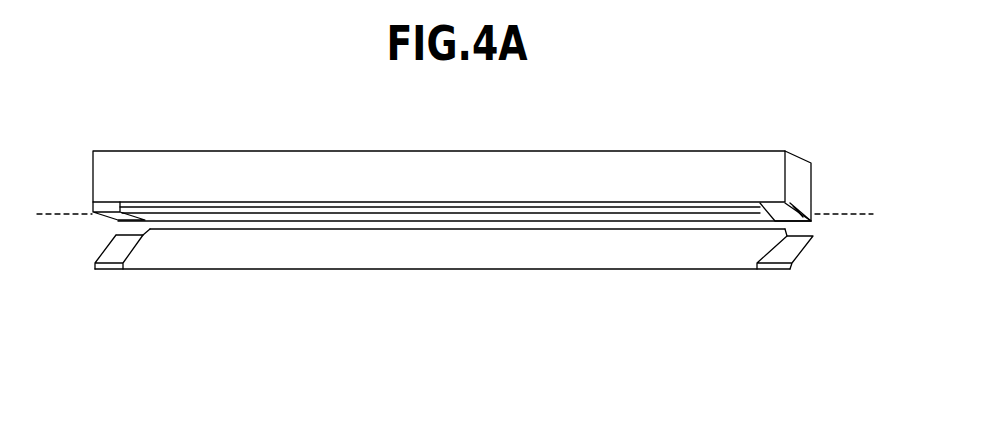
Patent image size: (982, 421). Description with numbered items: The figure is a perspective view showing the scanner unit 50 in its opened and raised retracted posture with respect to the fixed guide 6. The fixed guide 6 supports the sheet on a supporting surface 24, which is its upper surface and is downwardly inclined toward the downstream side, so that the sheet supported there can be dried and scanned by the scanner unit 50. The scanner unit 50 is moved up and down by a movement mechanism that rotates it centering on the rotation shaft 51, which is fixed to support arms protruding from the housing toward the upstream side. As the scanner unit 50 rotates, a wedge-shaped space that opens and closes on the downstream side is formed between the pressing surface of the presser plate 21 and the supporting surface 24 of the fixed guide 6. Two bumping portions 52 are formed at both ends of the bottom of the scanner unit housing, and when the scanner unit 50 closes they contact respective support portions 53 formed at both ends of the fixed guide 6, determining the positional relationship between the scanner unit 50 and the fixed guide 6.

The scanner unit 50 is at (363, 172).
The rotation shaft 51 is at (855, 213).
The bumping portion 52 is at (118, 221).
The support portion 53 is at (113, 253).
The presser plate 21 is at (301, 226).
The supporting surface 24 is at (367, 257).
The fixed guide 6 is at (478, 276).